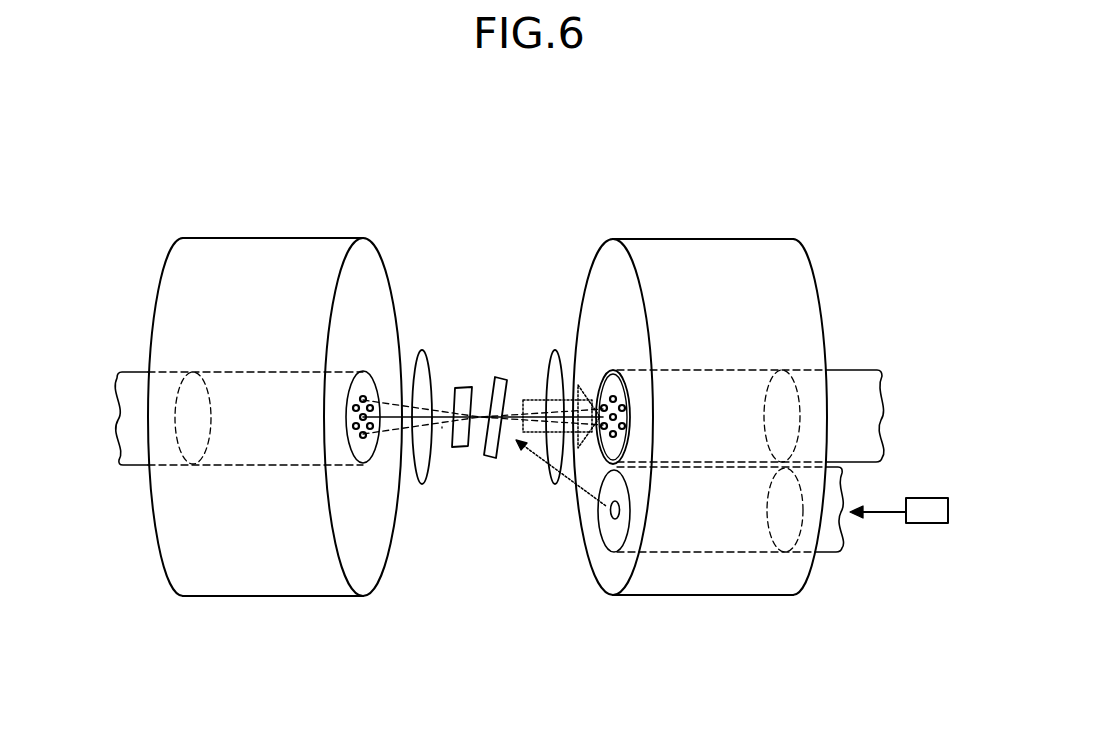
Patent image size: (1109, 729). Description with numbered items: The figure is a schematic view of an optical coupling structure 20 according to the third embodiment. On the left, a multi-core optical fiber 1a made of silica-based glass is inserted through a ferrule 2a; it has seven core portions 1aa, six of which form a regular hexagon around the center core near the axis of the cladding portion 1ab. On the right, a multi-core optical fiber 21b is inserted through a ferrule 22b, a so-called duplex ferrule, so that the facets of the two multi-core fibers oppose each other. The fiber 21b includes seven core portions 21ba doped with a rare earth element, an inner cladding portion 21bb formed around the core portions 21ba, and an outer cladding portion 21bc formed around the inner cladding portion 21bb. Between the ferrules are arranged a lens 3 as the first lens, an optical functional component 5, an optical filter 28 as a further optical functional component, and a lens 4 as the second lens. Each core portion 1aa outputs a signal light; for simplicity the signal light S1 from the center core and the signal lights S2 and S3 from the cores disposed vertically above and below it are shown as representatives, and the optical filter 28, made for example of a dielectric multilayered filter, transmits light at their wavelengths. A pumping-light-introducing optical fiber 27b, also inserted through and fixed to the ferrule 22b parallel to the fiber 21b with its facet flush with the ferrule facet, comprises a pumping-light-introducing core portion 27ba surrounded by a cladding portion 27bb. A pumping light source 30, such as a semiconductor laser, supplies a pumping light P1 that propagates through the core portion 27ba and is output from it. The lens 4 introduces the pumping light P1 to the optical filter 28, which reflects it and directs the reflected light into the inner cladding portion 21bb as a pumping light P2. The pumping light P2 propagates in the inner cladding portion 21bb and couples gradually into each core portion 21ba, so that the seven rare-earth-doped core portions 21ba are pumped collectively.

The multi-core optical fiber 1a is at (137, 372).
The core portions 1aa is at (365, 388).
The cladding portion 1ab is at (363, 463).
The ferrule 2a is at (271, 238).
The lens 3 is at (421, 349).
The lens 4 is at (554, 349).
The optical functional component 5 is at (464, 387).
The optical filter 28 is at (492, 377).
The optical coupling structure 20 is at (785, 198).
The multi-core optical fiber 21b is at (856, 369).
The core portions 21ba is at (611, 370).
The inner cladding portion 21bb is at (626, 410).
The outer cladding portion 21bc is at (626, 426).
The ferrule 22b is at (683, 238).
The pumping-light-introducing optical fiber 27b is at (835, 559).
The pumping-light-introducing core portion 27ba is at (612, 525).
The cladding portion 27bb is at (600, 519).
The pumping light source 30 is at (928, 498).
The signal light S1 is at (395, 422).
The signal light S2 is at (438, 408).
The signal light S3 is at (442, 427).
The pumping light P1 is at (568, 493).
The pumping light P2 is at (527, 400).